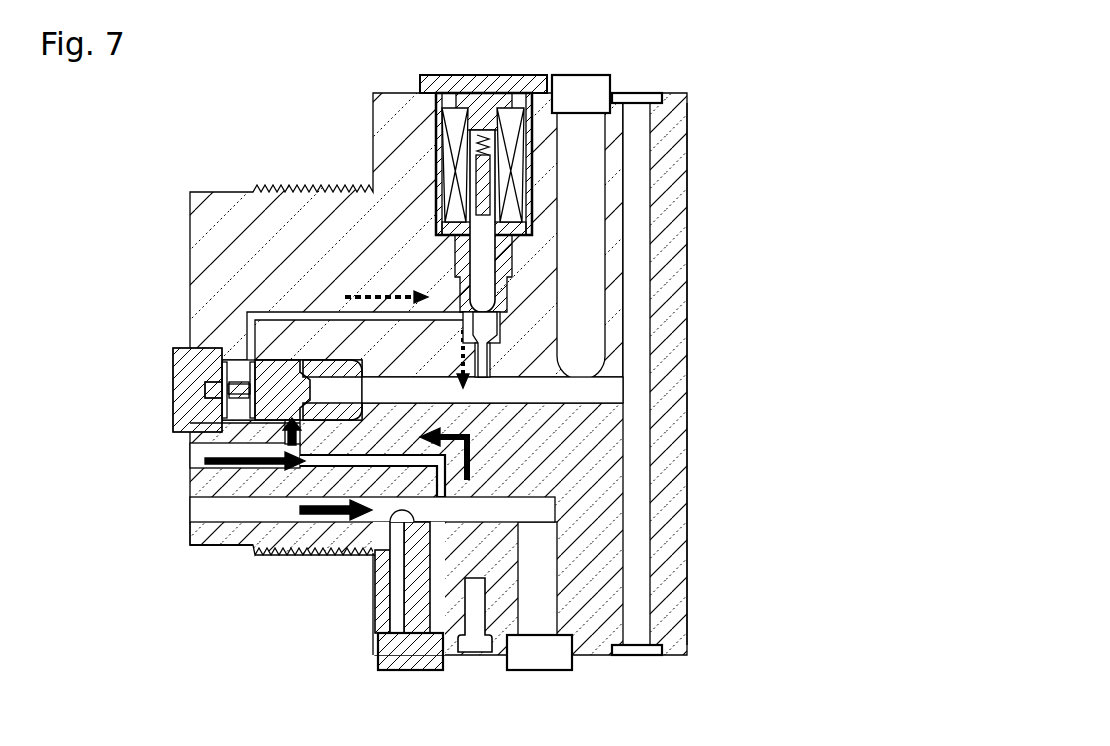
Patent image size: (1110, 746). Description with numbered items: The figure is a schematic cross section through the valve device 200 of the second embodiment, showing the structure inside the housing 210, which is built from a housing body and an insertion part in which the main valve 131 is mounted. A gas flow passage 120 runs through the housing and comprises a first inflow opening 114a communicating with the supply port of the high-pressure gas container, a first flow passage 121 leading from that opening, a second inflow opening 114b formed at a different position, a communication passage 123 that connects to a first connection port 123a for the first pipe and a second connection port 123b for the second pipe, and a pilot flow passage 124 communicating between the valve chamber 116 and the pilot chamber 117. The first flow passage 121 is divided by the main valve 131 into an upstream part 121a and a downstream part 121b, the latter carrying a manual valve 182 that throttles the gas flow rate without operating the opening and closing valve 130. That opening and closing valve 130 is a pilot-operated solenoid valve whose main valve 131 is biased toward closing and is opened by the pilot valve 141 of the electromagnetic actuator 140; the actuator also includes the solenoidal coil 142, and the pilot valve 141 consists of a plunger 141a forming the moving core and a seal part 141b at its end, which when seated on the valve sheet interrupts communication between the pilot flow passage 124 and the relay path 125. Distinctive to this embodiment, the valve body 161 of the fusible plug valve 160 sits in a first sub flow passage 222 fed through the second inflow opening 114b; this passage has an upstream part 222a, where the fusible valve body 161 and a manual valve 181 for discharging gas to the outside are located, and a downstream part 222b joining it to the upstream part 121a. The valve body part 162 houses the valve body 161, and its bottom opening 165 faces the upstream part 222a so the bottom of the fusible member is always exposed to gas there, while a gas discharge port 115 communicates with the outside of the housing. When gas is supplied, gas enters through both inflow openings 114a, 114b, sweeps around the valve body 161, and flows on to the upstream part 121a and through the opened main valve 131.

The valve device 200 is at (185, 109).
The housing 210 is at (185, 192).
The gas flow passage 120 is at (549, 411).
The communication passage 123 is at (640, 518).
The first connection port 123a is at (650, 100).
The second connection port 123b is at (645, 655).
The pilot flow passage 124 is at (305, 312).
The relay path 125 is at (483, 368).
The opening and closing valve 130 is at (107, 300).
The main valve 131 is at (268, 372).
The valve chamber 116 is at (220, 373).
The pilot chamber 117 is at (440, 300).
The first flow passage 121 is at (84, 395).
The upstream part 121a is at (230, 452).
The downstream part 121b is at (407, 388).
The first inflow opening 114a is at (195, 462).
The second inflow opening 114b is at (195, 510).
The electromagnetic actuator 140 is at (536, 153).
The pilot valve 141 is at (788, 195).
The plunger 141a is at (500, 220).
The seal part 141b is at (485, 250).
The solenoidal coil 142 is at (455, 130).
The manual valve 182 is at (584, 90).
The manual valve 181 is at (540, 660).
The gas discharge port 115 is at (472, 647).
The fusible plug valve 160 is at (385, 675).
The valve body 161 is at (412, 615).
The valve body part 162 is at (400, 590).
The opening 165 is at (400, 515).
The first sub flow passage 222 is at (295, 630).
The upstream part 222a is at (238, 512).
The downstream part 222b is at (333, 462).